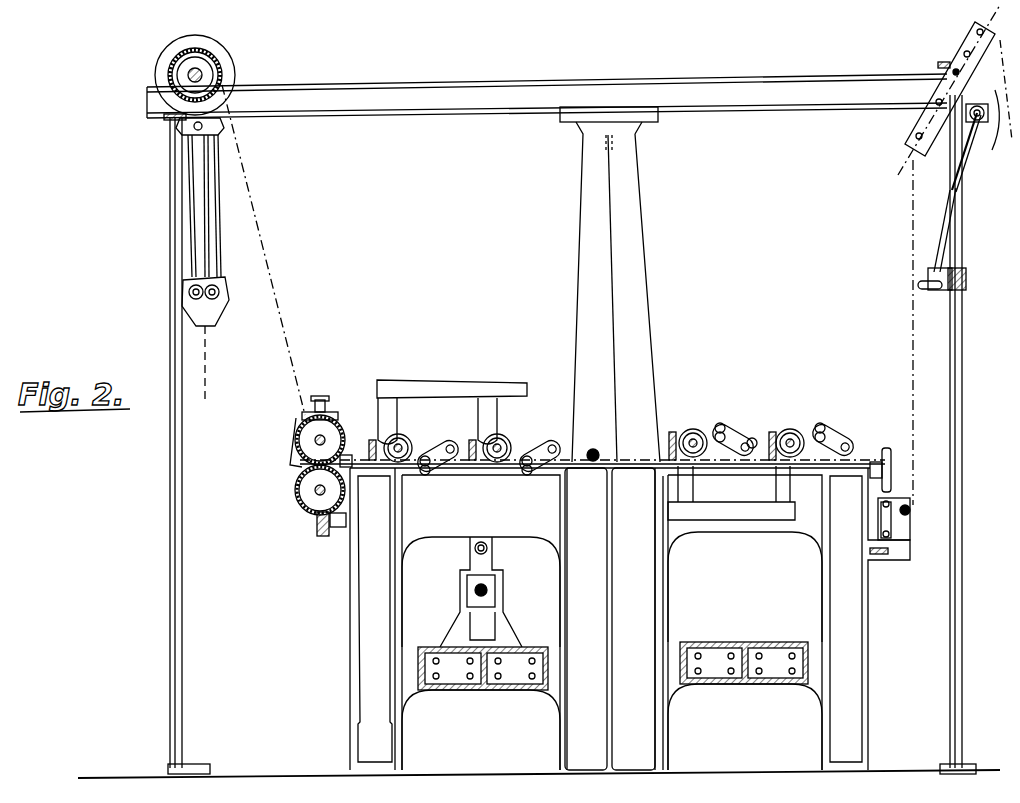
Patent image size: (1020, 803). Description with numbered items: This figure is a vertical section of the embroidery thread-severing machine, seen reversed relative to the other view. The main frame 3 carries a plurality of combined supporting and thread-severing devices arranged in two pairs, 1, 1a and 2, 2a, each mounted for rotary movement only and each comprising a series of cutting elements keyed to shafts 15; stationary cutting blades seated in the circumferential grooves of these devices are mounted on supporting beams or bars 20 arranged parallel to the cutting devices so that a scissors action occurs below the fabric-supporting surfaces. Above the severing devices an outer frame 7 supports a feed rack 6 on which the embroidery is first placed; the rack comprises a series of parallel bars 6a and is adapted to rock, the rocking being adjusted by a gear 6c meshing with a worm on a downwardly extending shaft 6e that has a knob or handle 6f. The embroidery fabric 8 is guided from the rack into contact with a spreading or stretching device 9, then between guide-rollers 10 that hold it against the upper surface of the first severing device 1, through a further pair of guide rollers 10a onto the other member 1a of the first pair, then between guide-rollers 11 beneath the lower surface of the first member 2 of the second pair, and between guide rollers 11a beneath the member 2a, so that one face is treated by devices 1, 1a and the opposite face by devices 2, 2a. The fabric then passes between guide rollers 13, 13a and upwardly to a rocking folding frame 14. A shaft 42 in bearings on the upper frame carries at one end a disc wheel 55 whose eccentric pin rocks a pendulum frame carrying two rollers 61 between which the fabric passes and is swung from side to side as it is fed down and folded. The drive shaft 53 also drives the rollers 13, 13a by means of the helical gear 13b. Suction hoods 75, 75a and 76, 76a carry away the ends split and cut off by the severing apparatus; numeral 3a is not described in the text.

The combined supporting and thread-severing device 1 is at (802, 430).
The combined supporting and thread-severing device 1a is at (700, 432).
The combined supporting and thread-severing device 2 is at (518, 466).
The combined supporting and thread-severing device 2a is at (420, 466).
The main frame 3 is at (358, 608).
The frame stop 3a is at (908, 508).
The feed rack 6 is at (940, 86).
The parallel bars 6a is at (928, 125).
The gear 6c is at (945, 65).
The downwardly extending shaft 6e is at (955, 160).
The knob or handle 6f is at (920, 286).
The outer frame 7 is at (815, 103).
The embroidery fabric 8 is at (913, 218).
The spreading or stretching device 9 is at (892, 525).
The guide-rollers 10 is at (825, 430).
The guide rollers 10a is at (717, 430).
The guide-rollers 11 is at (532, 470).
The guide rollers 11a is at (440, 466).
The guide roller 13 is at (296, 440).
The guide roller 13a is at (297, 492).
The helical gear 13b is at (322, 538).
The rocking folding frame 14 is at (215, 232).
The shafts 15 is at (403, 455).
The supporting beams or bars 20 is at (598, 455).
The shaft 42 is at (205, 76).
The drive shaft 53 is at (338, 530).
The disc wheel 55 is at (234, 66).
The rollers 61 is at (190, 292).
The suction hood 75 is at (686, 496).
The suction hood 75a is at (782, 496).
The suction hood 76 is at (385, 412).
The suction hood 76a is at (487, 412).